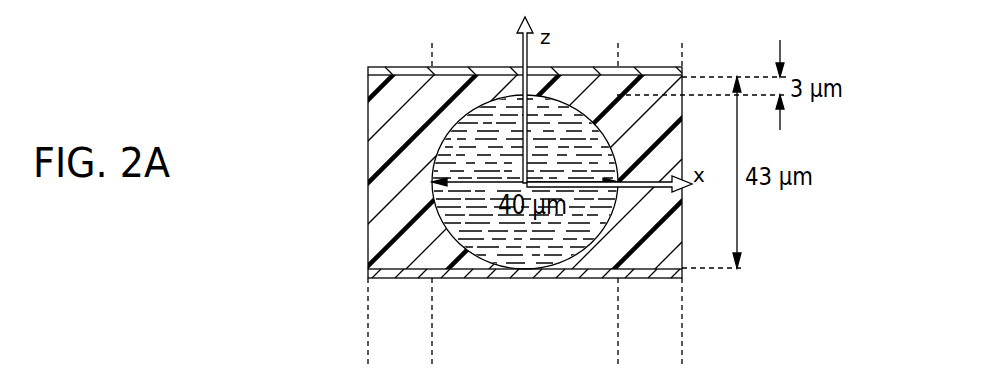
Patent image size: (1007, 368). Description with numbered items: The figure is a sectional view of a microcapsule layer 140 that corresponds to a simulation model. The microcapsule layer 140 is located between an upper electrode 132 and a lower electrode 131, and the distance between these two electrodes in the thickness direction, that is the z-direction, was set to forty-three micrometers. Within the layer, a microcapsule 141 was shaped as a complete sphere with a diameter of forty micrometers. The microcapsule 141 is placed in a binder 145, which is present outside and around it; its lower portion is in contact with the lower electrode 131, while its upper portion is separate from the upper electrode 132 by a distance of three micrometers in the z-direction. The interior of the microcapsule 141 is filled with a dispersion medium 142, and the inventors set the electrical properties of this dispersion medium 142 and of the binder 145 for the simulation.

The lower electrode 131 is at (648, 278).
The upper electrode 132 is at (650, 67).
The microcapsule layer 140 is at (302, 95).
The microcapsule 141 is at (444, 136).
The dispersion medium 142 is at (435, 198).
The binder 145 is at (383, 107).